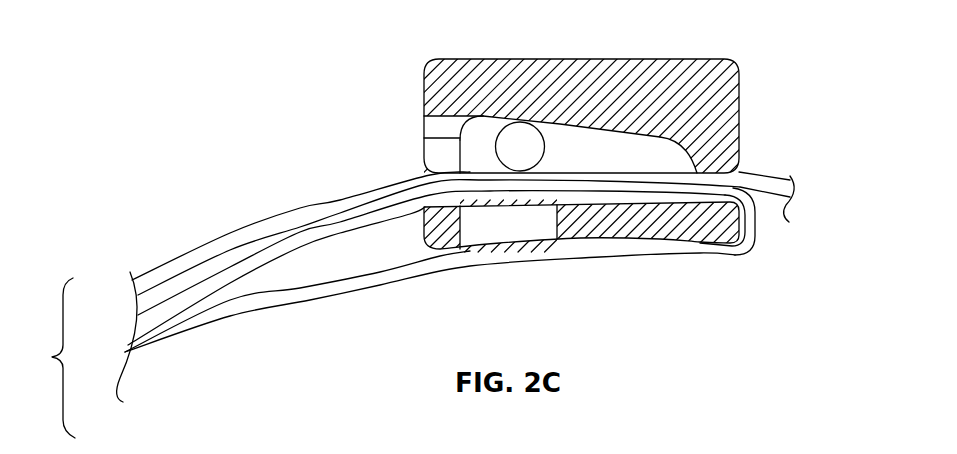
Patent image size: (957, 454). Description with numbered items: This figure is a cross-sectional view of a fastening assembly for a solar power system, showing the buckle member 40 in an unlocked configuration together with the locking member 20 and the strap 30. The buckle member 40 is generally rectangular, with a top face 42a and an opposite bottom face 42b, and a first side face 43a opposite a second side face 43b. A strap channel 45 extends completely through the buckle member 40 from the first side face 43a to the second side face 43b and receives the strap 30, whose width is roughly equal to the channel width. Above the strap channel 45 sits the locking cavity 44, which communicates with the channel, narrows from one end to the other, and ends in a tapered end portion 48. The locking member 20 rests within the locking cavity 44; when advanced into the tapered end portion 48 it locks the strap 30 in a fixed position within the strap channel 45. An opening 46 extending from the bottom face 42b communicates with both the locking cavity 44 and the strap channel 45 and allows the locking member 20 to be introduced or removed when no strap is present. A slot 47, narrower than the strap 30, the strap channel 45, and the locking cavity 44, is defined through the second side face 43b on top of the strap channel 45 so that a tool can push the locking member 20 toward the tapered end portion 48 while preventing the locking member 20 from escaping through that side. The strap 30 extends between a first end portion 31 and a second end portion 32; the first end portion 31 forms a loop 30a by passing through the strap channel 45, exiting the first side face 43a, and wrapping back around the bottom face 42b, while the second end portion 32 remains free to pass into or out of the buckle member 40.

The locking member 20 is at (515, 135).
The strap 30 is at (77, 355).
The loop 30a is at (757, 235).
The first end portion 31 is at (153, 333).
The second end portion 32 is at (177, 272).
The buckle member 40 is at (734, 72).
The top face 42a is at (606, 60).
The bottom face 42b is at (640, 241).
The first side face 43a is at (741, 128).
The second side face 43b is at (418, 83).
The locking cavity 44 is at (477, 134).
The strap channel 45 is at (426, 174).
The opening 46 is at (497, 222).
The slot 47 is at (435, 150).
The tapered end portion 48 is at (678, 169).